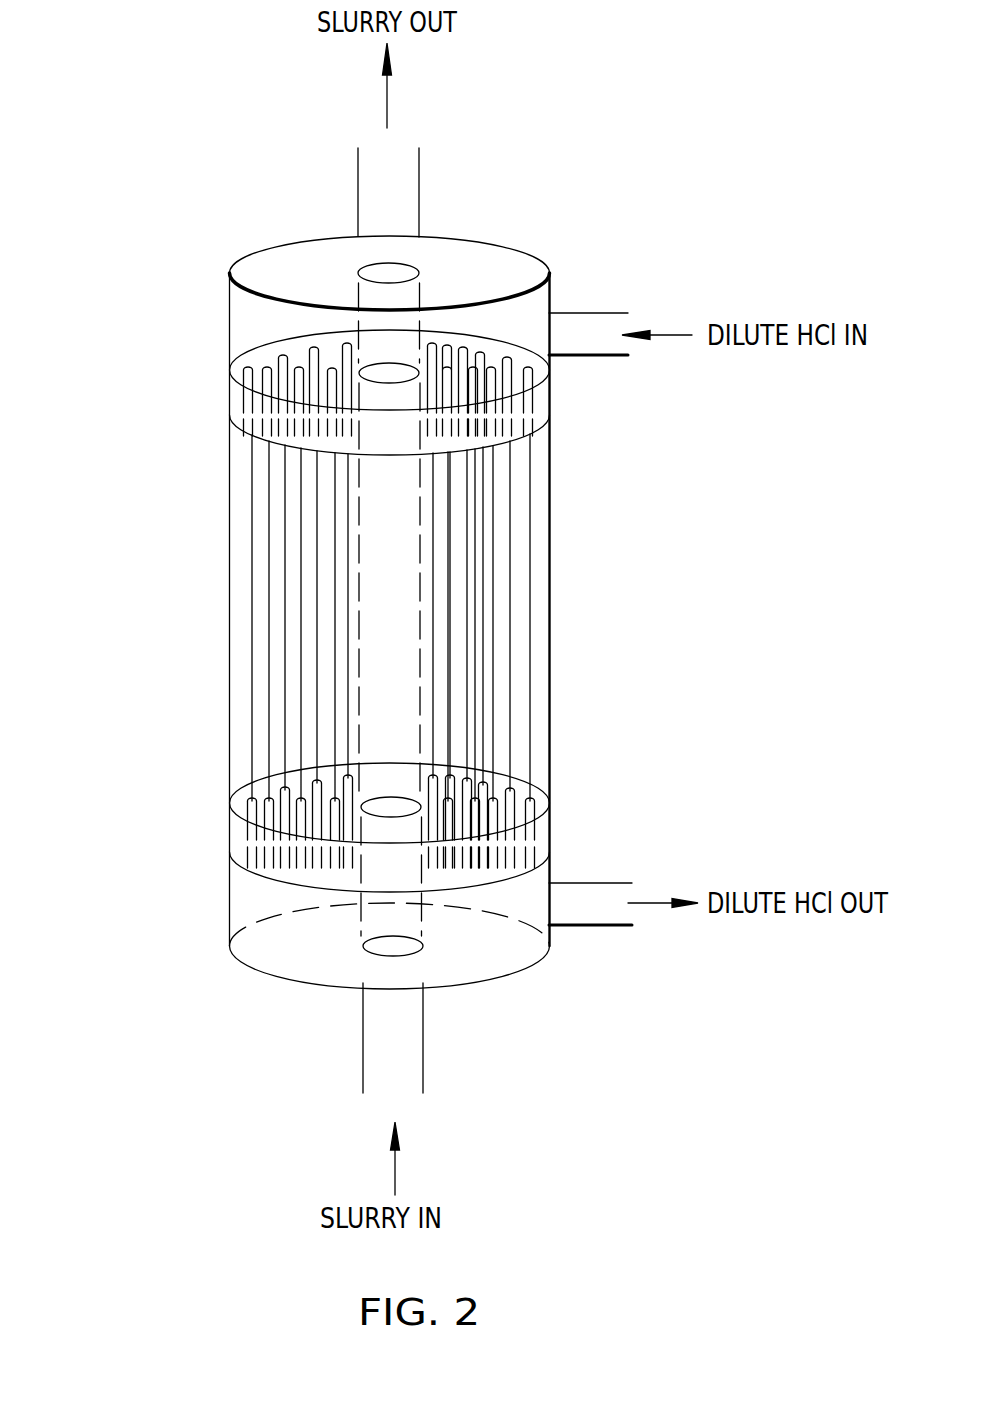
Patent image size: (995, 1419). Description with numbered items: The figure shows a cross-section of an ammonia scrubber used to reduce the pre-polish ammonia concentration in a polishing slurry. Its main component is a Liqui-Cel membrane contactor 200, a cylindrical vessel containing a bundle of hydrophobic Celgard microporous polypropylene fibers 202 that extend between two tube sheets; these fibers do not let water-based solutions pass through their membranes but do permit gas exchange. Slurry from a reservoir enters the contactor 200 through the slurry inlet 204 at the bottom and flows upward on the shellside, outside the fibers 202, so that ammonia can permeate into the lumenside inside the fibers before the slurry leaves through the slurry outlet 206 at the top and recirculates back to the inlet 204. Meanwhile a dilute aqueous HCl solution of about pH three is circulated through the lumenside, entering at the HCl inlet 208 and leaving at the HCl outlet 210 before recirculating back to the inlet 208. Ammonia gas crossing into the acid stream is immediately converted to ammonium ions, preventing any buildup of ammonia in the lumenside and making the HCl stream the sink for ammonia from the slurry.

The membrane contactor 200 is at (363, 615).
The microporous polypropylene fibers 202 is at (553, 627).
The slurry inlet 204 is at (363, 1042).
The slurry outlet 206 is at (357, 177).
The HCl inlet 208 is at (592, 313).
The HCl outlet 210 is at (590, 883).